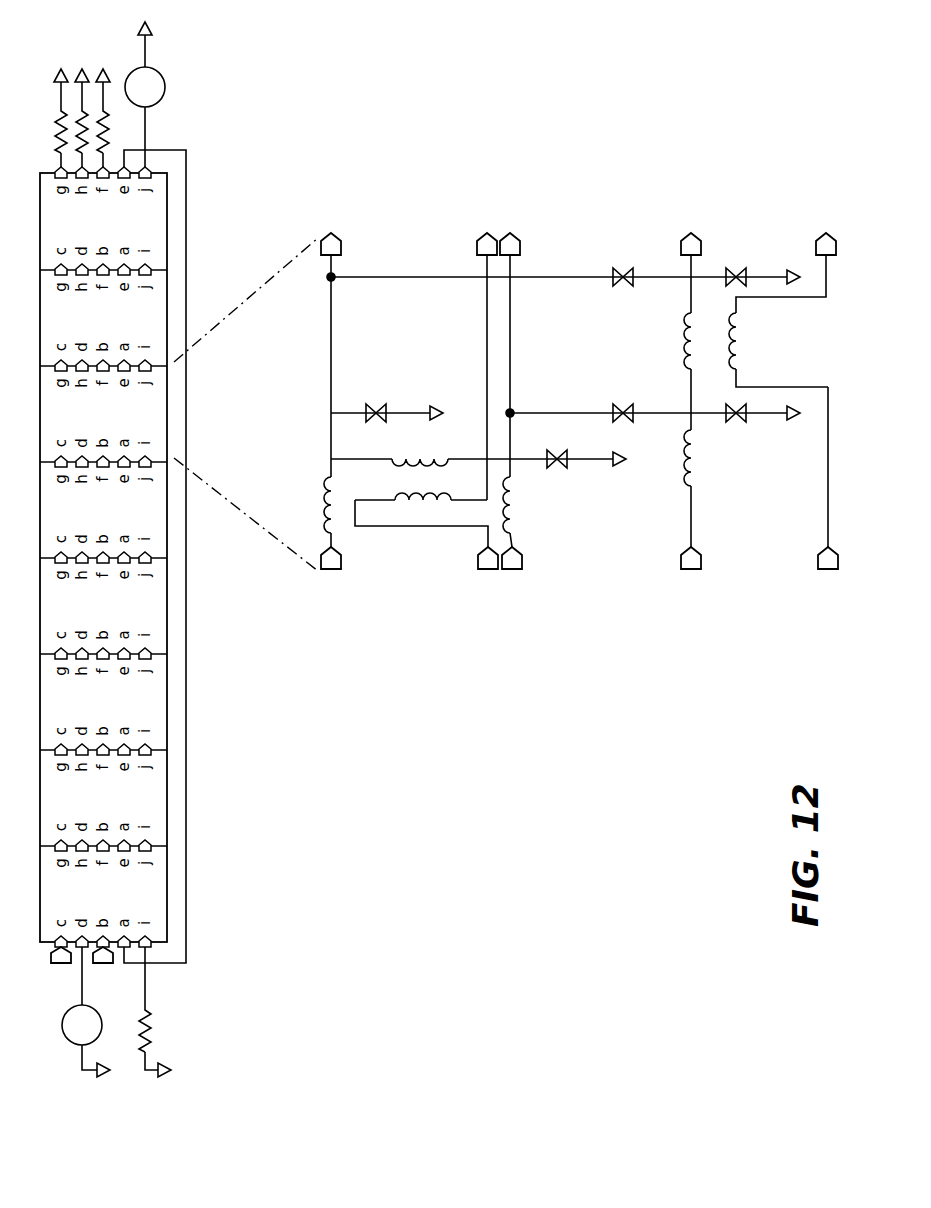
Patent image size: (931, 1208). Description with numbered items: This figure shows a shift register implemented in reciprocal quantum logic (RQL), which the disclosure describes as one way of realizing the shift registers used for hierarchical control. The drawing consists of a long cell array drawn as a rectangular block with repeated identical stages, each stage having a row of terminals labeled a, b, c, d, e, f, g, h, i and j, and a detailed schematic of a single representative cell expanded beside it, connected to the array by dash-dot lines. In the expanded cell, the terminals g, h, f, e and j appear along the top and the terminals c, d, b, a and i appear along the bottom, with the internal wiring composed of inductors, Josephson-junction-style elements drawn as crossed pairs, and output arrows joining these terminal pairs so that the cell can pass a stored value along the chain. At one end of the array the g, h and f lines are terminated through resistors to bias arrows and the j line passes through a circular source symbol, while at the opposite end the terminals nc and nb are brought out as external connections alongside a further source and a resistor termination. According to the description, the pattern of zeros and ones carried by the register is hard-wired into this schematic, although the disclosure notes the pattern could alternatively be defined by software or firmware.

The terminal a is at (690, 542).
The terminal b is at (511, 537).
The terminal c is at (330, 537).
The terminal d is at (426, 549).
The terminal e is at (690, 347).
The terminal f is at (509, 344).
The terminal g is at (330, 343).
The terminal h is at (486, 354).
The terminal i is at (827, 491).
The terminal j is at (782, 299).
The terminal nc is at (61, 969).
The terminal nb is at (103, 970).